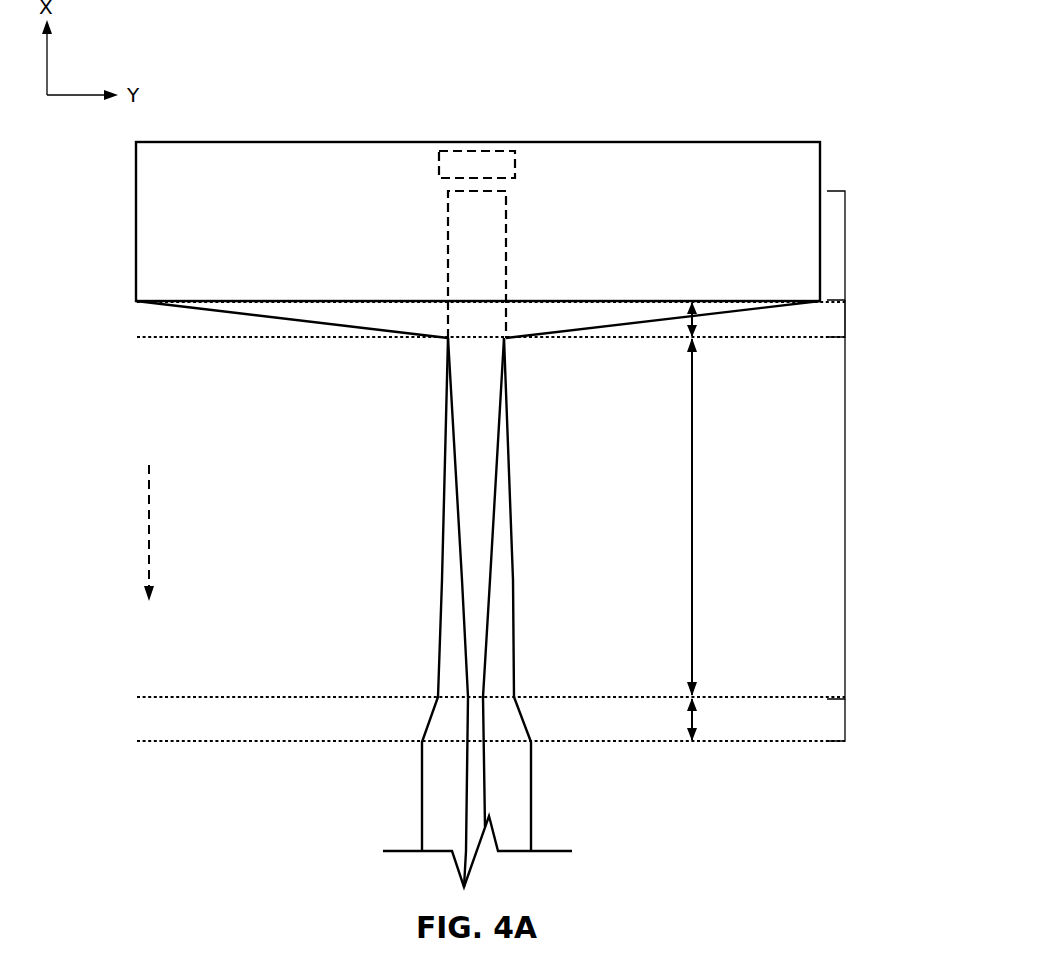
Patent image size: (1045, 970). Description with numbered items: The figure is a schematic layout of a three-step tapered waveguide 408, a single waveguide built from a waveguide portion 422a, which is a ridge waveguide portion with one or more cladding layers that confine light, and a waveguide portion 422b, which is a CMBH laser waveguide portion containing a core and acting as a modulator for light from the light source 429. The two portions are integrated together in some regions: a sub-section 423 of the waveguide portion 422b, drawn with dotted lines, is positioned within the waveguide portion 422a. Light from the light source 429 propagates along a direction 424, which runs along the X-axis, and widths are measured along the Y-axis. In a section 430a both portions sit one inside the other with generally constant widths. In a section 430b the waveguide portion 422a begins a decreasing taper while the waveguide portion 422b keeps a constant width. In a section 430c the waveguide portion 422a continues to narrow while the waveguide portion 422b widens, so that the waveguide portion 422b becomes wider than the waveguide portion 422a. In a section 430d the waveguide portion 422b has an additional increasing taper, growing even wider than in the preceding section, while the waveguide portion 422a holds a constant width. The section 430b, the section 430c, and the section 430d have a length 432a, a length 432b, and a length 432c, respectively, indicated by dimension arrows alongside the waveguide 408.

The waveguide 408 is at (853, 112).
The waveguide portion 422a is at (137, 257).
The waveguide portion 422b is at (442, 493).
The sub-section 423 is at (448, 235).
The light source 429 is at (439, 163).
The direction 424 is at (149, 522).
The section 430a is at (845, 245).
The section 430b is at (845, 320).
The section 430c is at (845, 513).
The section 430d is at (845, 719).
The length 432a is at (695, 321).
The length 432b is at (693, 428).
The length 432c is at (696, 717).